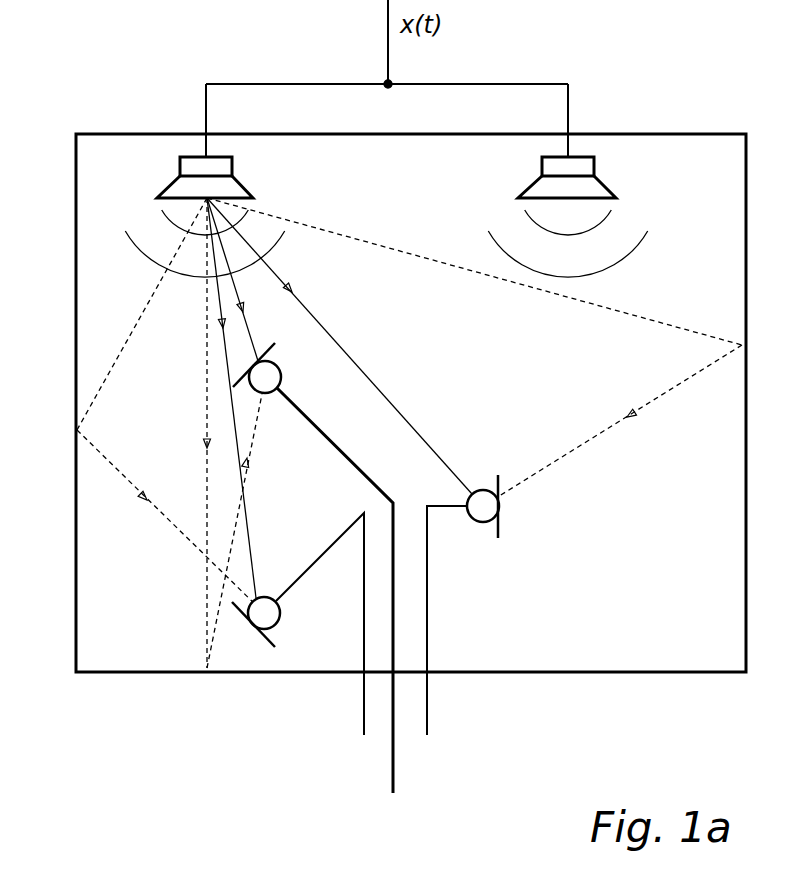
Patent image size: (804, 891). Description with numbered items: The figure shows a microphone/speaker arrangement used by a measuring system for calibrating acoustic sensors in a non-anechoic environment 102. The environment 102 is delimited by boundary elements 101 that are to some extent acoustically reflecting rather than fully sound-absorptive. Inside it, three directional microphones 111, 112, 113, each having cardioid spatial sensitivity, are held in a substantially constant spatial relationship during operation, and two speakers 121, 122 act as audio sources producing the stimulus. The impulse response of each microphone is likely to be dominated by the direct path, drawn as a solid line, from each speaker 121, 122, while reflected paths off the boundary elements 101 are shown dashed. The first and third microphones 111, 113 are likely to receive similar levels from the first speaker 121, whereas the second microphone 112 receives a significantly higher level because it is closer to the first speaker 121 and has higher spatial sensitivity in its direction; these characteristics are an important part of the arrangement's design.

The boundary elements 101 is at (532, 672).
The environment 102 is at (642, 567).
The first microphone 111 is at (280, 616).
The second microphone 112 is at (278, 362).
The third microphone 113 is at (483, 522).
The first speaker 121 is at (233, 173).
The second speaker 122 is at (542, 166).